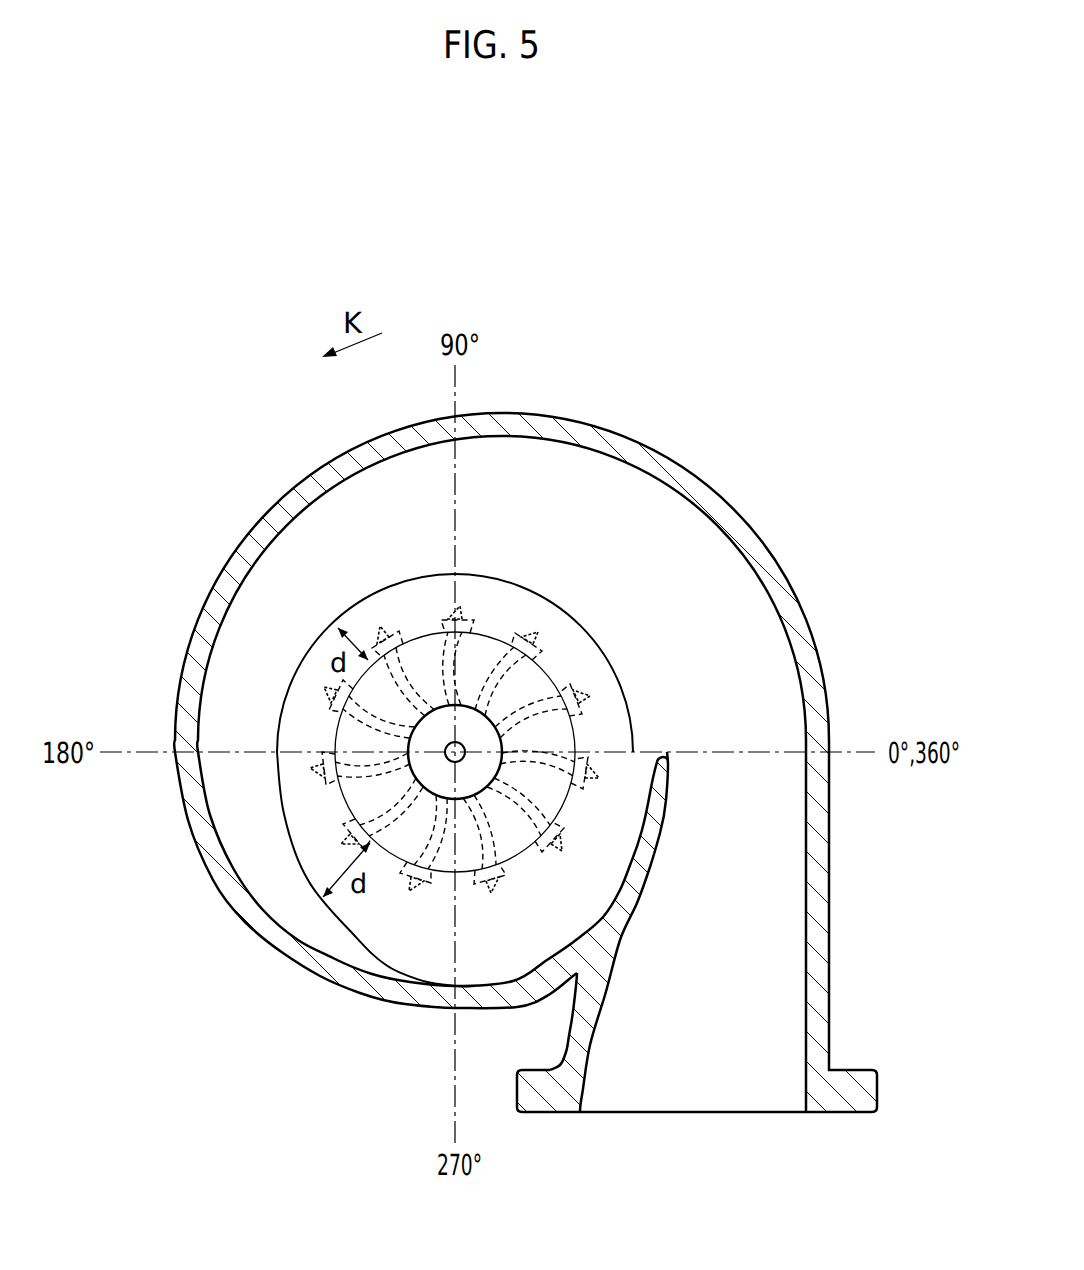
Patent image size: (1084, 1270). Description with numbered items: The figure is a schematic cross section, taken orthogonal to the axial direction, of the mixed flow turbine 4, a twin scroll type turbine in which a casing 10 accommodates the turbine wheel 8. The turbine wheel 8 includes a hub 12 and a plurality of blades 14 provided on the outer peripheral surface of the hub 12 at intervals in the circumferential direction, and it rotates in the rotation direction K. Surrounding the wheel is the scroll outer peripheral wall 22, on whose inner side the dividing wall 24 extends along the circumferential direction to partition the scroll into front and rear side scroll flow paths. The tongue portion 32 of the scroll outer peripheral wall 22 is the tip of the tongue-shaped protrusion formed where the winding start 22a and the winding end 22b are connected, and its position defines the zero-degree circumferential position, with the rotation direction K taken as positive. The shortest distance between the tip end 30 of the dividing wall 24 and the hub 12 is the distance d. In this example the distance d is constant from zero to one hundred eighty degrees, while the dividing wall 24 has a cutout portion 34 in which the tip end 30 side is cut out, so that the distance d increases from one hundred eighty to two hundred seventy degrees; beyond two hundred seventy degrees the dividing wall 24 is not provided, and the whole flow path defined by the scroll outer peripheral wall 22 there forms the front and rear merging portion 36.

The mixed flow turbine 4 is at (757, 433).
The turbine wheel 8 is at (382, 612).
The casing 10 is at (760, 528).
The hub 12 is at (345, 690).
The blades 14 is at (503, 634).
The scroll outer peripheral wall 22 is at (197, 838).
The winding start 22a is at (565, 1045).
The winding end 22b is at (517, 1009).
The dividing wall 24 is at (266, 594).
The tip end 30 is at (547, 628).
The tongue portion 32 is at (662, 748).
The cutout portion 34 is at (352, 908).
The front and rear merging portion 36 is at (420, 948).